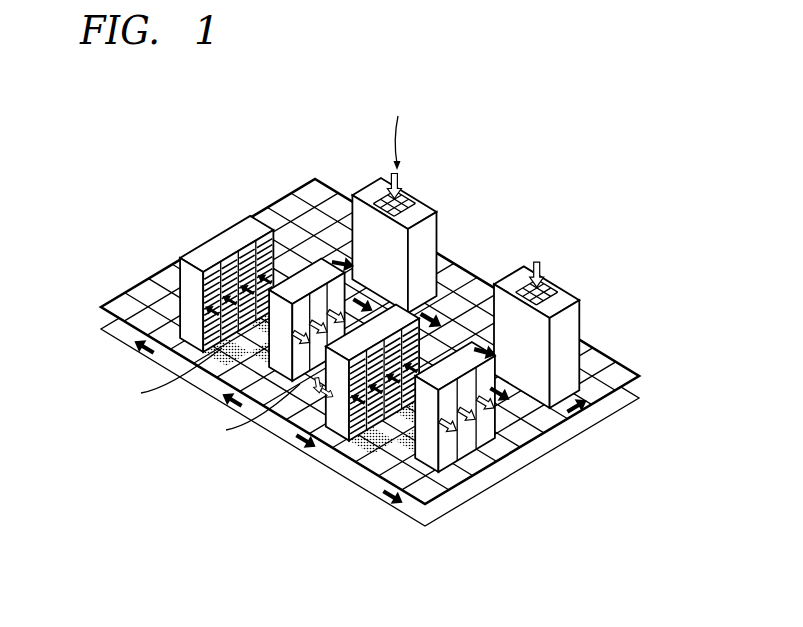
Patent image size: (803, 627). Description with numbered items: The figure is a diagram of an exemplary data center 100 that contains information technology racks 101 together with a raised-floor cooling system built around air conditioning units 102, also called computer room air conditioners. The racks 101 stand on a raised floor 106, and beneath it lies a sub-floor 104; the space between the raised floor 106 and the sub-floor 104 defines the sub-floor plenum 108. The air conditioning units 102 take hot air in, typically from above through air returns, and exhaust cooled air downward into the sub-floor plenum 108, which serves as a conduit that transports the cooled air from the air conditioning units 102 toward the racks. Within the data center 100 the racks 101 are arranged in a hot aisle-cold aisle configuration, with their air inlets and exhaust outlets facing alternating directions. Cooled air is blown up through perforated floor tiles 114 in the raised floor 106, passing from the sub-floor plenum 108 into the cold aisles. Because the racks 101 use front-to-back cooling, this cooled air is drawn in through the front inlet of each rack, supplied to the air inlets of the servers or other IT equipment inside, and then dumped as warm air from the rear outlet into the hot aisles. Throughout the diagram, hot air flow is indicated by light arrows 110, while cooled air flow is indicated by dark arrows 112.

The data center 100 is at (166, 85).
The information technology (IT) racks 101 is at (210, 246).
The air conditioning units (ACUs) 102 is at (437, 204).
The sub-floor 104 is at (370, 493).
The raised floor 106 is at (523, 453).
The sub-floor plenum 108 is at (610, 406).
The light arrows 110 is at (550, 268).
The dark arrows 112 is at (445, 304).
The perforated floor tiles 114 is at (346, 456).